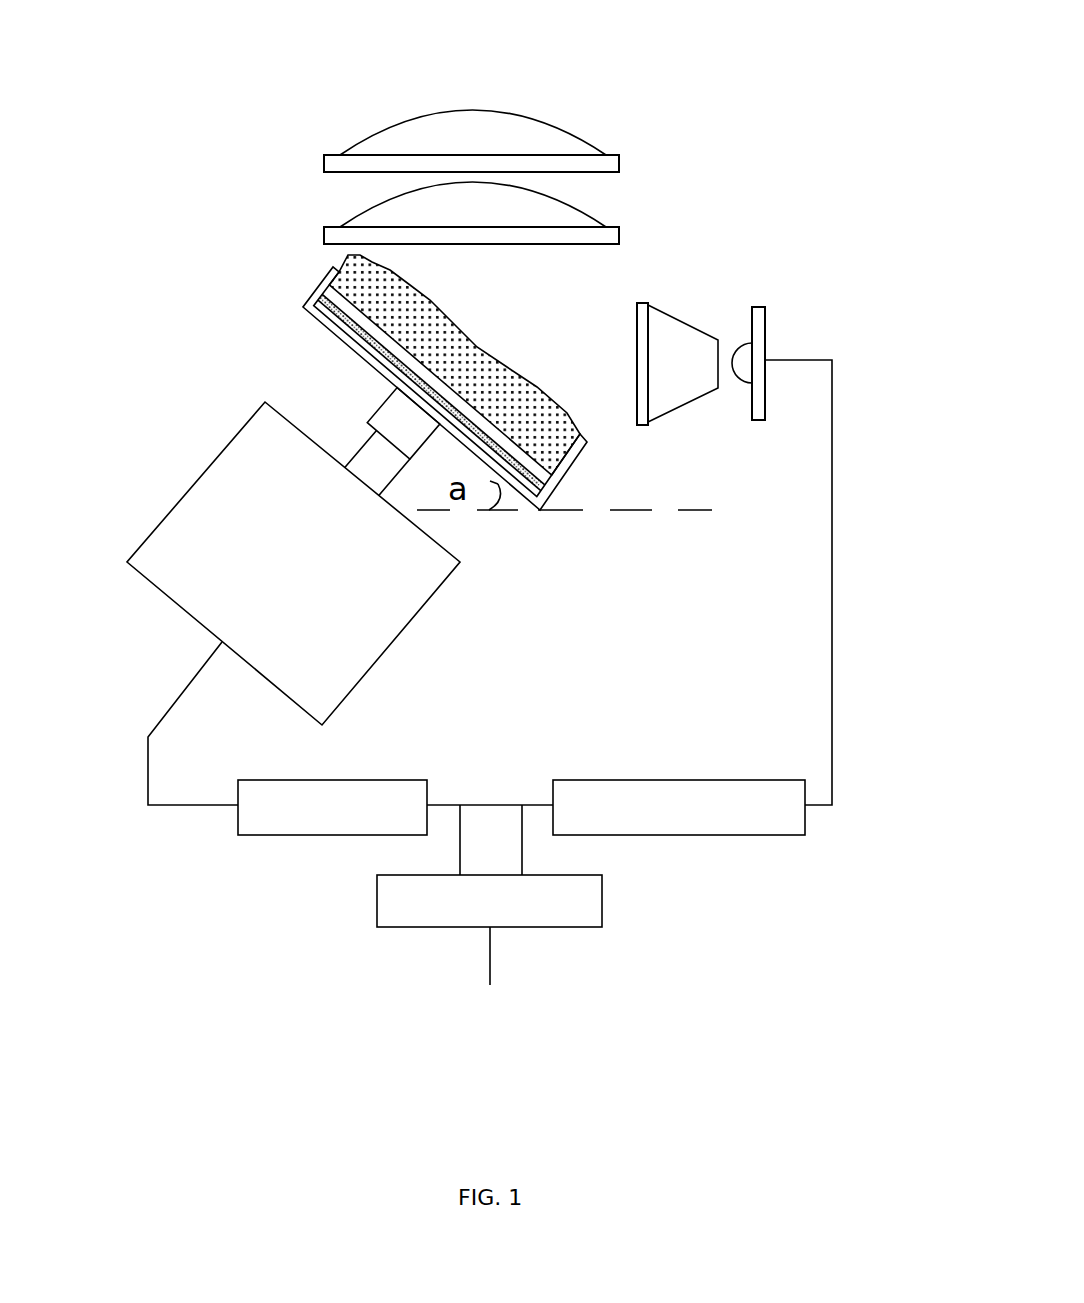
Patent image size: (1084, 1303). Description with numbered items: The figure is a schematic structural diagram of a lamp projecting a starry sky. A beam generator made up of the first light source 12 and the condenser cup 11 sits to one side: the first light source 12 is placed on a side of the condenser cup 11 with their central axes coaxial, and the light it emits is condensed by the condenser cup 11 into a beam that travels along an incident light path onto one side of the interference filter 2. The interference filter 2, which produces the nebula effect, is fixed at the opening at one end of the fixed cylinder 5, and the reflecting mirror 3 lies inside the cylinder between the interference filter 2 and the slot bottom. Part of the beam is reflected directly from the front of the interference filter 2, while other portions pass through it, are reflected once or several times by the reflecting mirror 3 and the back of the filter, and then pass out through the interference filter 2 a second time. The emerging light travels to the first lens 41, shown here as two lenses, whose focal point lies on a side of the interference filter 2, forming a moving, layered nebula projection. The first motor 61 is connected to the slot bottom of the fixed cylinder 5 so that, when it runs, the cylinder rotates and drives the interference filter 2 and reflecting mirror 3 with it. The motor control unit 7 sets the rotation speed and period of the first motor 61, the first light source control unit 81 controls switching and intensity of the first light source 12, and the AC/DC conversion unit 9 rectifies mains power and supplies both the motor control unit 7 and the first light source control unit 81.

The first lens 41 is at (527, 215).
The fixed cylinder 5 is at (330, 298).
The reflecting mirror 3 is at (352, 328).
The interference filter 2 is at (483, 355).
The first motor 61 is at (235, 532).
The condenser cup 11 is at (668, 348).
The first light source 12 is at (758, 348).
The motor control unit 7 is at (375, 780).
The first light source control unit 81 is at (690, 780).
The AC/DC conversion unit 9 is at (557, 928).